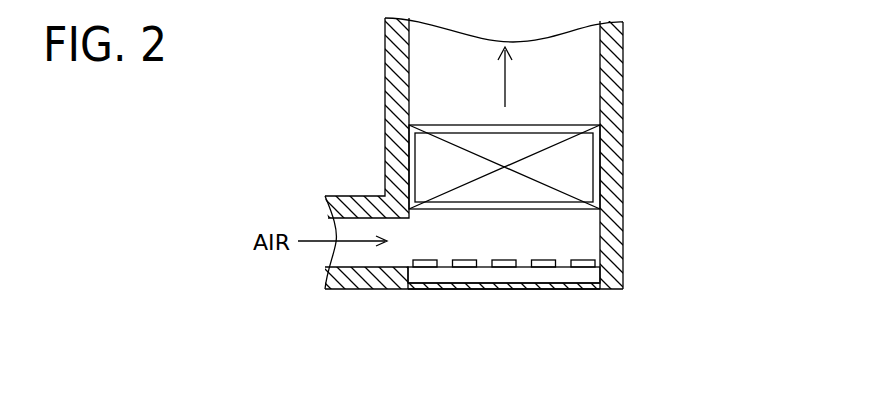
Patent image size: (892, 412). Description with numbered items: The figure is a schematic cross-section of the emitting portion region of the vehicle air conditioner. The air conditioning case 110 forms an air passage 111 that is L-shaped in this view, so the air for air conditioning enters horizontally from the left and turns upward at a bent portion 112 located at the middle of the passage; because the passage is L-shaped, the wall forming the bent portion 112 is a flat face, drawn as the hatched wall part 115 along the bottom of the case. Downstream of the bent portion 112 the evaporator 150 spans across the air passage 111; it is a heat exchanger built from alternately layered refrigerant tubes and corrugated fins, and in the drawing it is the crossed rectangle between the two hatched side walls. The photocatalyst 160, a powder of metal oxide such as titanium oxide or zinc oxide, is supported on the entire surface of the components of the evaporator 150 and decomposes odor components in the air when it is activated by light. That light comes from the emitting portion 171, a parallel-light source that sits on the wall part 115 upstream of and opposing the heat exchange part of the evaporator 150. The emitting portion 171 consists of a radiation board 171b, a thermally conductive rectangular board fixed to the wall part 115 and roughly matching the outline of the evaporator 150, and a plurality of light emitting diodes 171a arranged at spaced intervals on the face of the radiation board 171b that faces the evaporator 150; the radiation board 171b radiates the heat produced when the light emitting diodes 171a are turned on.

The air conditioning case 110 is at (362, 290).
The air passage 111 is at (446, 223).
The bent portion 112 is at (555, 293).
The wall part 115 is at (482, 290).
The evaporator 150 is at (580, 155).
The photocatalyst 160 is at (597, 178).
The emitting portion 171 is at (724, 227).
The light emitting diode 171a is at (583, 259).
The radiation board 171b is at (582, 275).